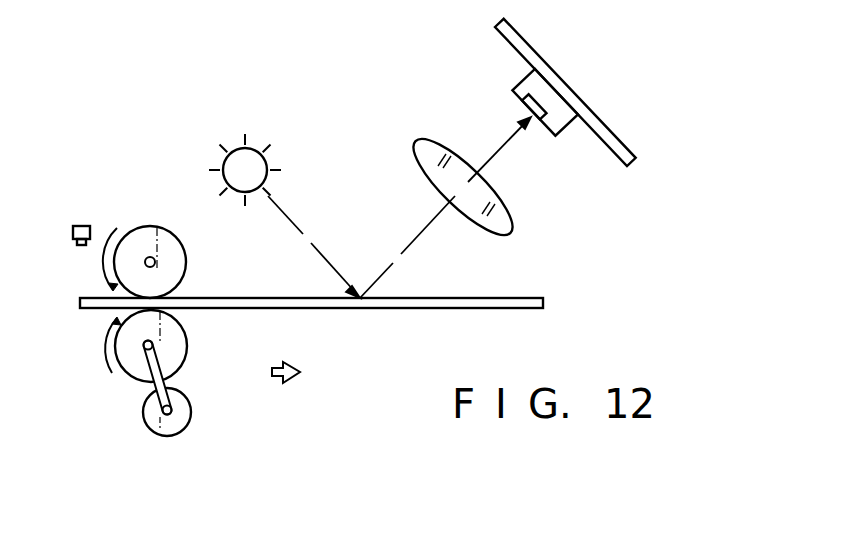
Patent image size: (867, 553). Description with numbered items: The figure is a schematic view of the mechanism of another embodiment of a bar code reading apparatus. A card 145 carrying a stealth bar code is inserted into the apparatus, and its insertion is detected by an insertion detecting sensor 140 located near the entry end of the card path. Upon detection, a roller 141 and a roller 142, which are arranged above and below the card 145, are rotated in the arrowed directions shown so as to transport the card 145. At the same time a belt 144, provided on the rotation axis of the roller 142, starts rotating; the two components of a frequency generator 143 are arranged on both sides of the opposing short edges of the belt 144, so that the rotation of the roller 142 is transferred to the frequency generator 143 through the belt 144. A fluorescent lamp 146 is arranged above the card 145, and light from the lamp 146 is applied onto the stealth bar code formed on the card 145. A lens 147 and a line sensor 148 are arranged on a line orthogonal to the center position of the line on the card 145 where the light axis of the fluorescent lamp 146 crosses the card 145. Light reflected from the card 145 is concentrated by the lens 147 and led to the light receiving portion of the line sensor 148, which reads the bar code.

The insertion detecting sensor 140 is at (85, 222).
The roller 141 is at (177, 232).
The roller 142 is at (187, 337).
The frequency generator 143 is at (192, 405).
The belt 144 is at (148, 393).
The card 145 is at (327, 308).
The fluorescent lamp 146 is at (267, 160).
The lens 147 is at (513, 225).
The line sensor 148 is at (572, 87).